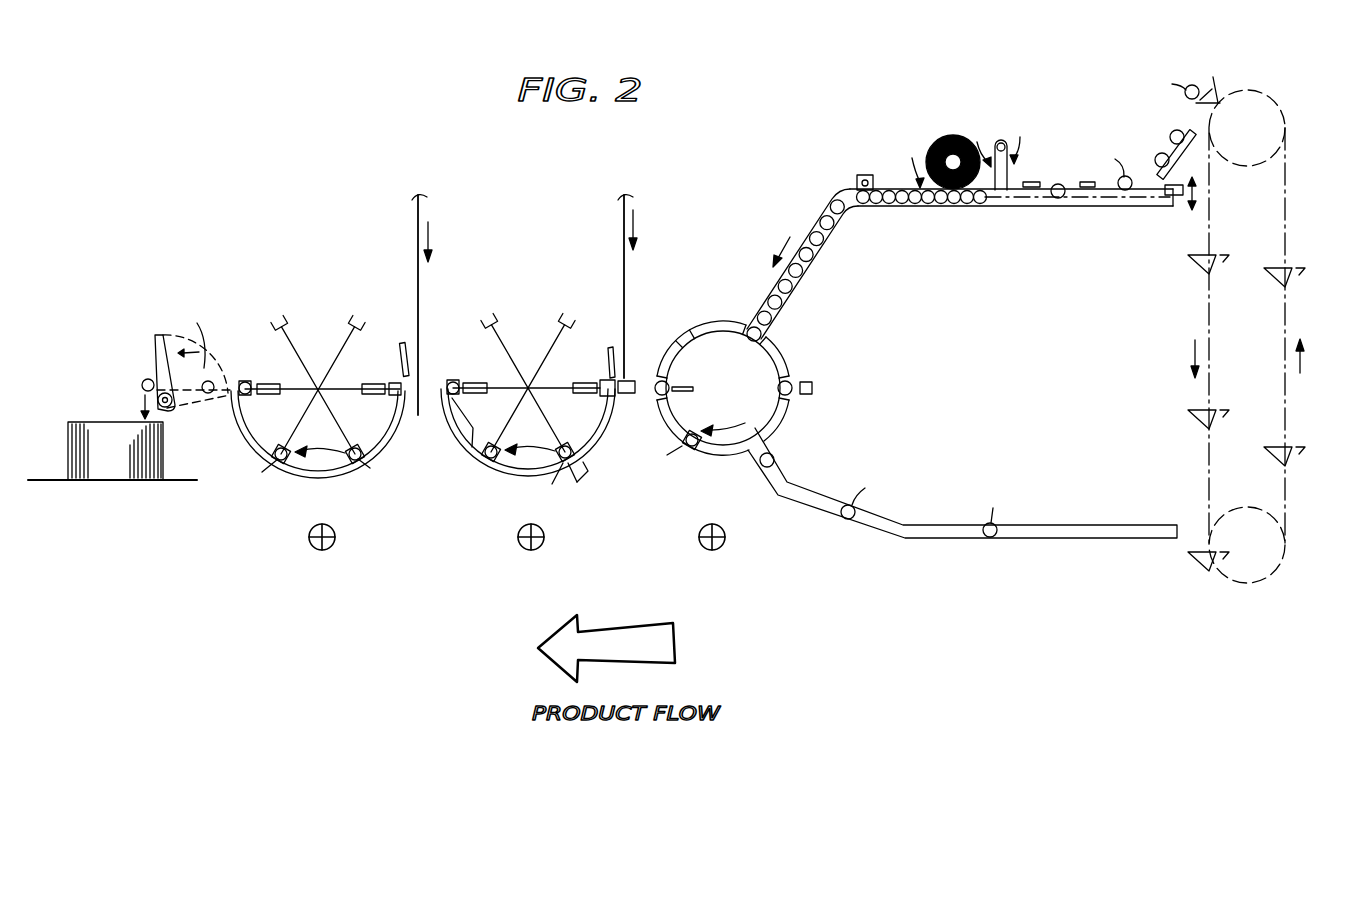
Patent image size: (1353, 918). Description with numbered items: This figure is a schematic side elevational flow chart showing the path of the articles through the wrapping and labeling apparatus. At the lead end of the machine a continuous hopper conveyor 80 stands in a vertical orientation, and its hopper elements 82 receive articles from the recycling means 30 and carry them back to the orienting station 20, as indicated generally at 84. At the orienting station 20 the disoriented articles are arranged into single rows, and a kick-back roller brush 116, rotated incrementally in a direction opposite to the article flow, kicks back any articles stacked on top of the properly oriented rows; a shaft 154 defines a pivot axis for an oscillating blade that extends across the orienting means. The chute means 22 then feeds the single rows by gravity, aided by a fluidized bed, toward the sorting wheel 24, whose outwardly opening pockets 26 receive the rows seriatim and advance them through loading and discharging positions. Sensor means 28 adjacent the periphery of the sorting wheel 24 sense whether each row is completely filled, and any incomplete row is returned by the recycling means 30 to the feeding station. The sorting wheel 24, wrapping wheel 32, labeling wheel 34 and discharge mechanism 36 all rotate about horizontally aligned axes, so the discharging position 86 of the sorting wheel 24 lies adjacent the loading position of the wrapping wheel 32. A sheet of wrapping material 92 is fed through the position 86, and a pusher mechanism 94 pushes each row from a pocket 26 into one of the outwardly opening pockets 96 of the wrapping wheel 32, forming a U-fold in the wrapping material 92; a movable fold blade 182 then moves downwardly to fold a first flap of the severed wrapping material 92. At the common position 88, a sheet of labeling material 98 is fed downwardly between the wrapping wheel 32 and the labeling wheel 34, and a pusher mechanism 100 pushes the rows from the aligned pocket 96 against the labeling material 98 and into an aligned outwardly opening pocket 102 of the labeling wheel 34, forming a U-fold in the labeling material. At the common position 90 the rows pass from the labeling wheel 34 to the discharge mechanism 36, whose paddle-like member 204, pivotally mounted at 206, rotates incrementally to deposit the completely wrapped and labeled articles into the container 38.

The orienting station 20 is at (1056, 170).
The chute means 22 is at (806, 226).
The sorting wheel 24 is at (710, 473).
The outwardly opening pockets 26 is at (691, 331).
The sensor means 28 is at (813, 382).
The recycling means 30 is at (1094, 520).
The wrapping wheel 32 is at (488, 474).
The labeling wheel 34 is at (302, 480).
The discharge mechanism 36 is at (216, 430).
The container 38 is at (85, 428).
The hopper conveyor 80 is at (1301, 142).
The hopper elements 82 is at (1278, 274).
The return location 84 is at (1203, 72).
The discharging position 86 is at (645, 370).
The common position 88 is at (431, 370).
The common position 90 is at (234, 364).
The wrapping material 92 is at (624, 253).
The pusher mechanism 94 is at (695, 388).
The outwardly opening pockets 96 is at (566, 320).
The labeling material 98 is at (419, 277).
The pusher mechanism 100 is at (476, 382).
The outwardly opening pocket 102 is at (362, 318).
The kick-back roller brush 116 is at (948, 140).
The shaft 154 is at (1000, 142).
The movable fold blade 182 is at (610, 347).
The paddle-like member 204 is at (153, 340).
The pivot 206 is at (170, 408).